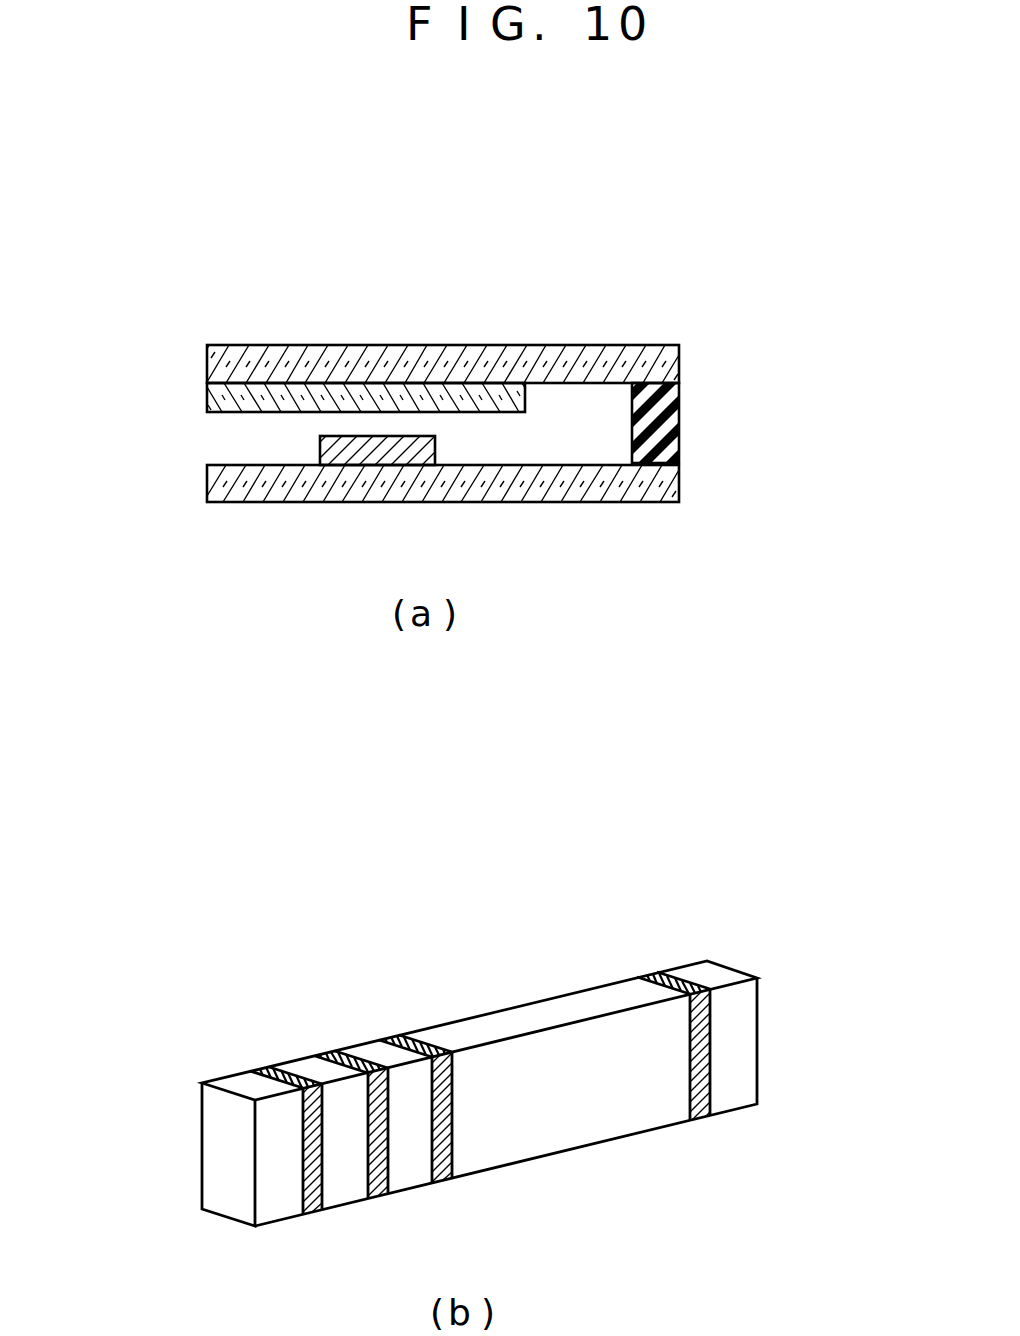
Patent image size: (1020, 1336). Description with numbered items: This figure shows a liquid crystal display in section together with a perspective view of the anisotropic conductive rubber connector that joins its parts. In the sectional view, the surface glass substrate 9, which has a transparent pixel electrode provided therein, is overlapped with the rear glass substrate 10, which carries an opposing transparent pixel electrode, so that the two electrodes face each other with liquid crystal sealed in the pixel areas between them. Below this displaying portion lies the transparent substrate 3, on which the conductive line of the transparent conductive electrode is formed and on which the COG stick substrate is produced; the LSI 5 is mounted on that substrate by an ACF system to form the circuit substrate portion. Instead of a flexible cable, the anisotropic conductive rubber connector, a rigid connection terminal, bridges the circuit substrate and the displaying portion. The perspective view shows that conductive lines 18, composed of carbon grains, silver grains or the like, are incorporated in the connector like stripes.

The transparent substrate 3 is at (320, 504).
The LSI 5 is at (320, 452).
The surface glass substrate 9 is at (448, 345).
The rear glass substrate 10 is at (526, 398).
The conductive lines 18 is at (647, 978).